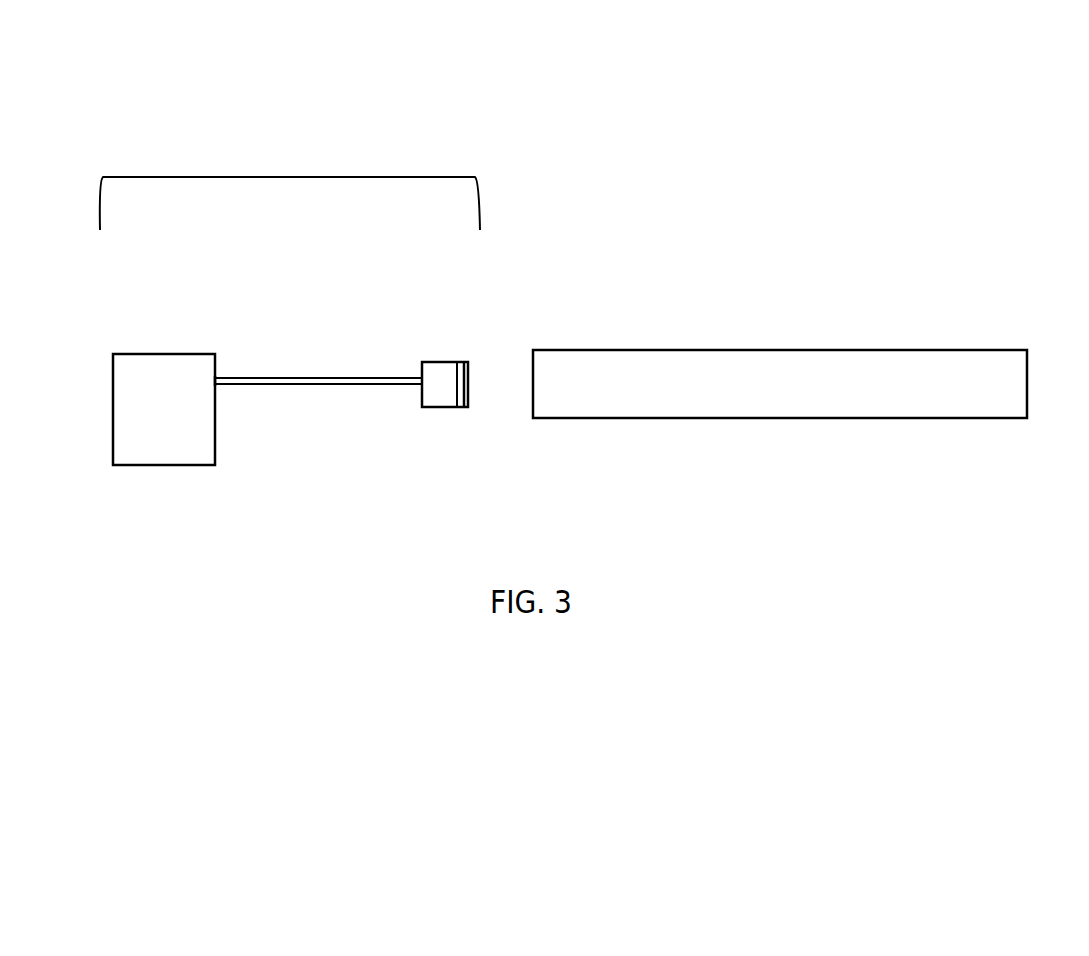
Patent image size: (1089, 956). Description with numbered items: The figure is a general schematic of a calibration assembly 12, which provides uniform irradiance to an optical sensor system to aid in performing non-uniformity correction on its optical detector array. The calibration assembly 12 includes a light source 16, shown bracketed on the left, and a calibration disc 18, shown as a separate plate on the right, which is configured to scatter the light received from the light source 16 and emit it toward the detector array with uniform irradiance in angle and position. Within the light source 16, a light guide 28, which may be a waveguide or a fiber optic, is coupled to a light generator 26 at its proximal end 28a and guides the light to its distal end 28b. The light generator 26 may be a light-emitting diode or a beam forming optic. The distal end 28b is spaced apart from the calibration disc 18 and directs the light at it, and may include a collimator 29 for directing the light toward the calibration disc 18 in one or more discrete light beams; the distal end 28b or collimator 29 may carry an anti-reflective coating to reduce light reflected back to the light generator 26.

The calibration assembly 12 is at (970, 171).
The light source 16 is at (290, 177).
The calibration disc 18 is at (794, 385).
The light generator 26 is at (164, 378).
The light guide 28 is at (357, 376).
The proximal end 28a is at (215, 387).
The distal end 28b is at (442, 378).
The collimator 29 is at (468, 387).